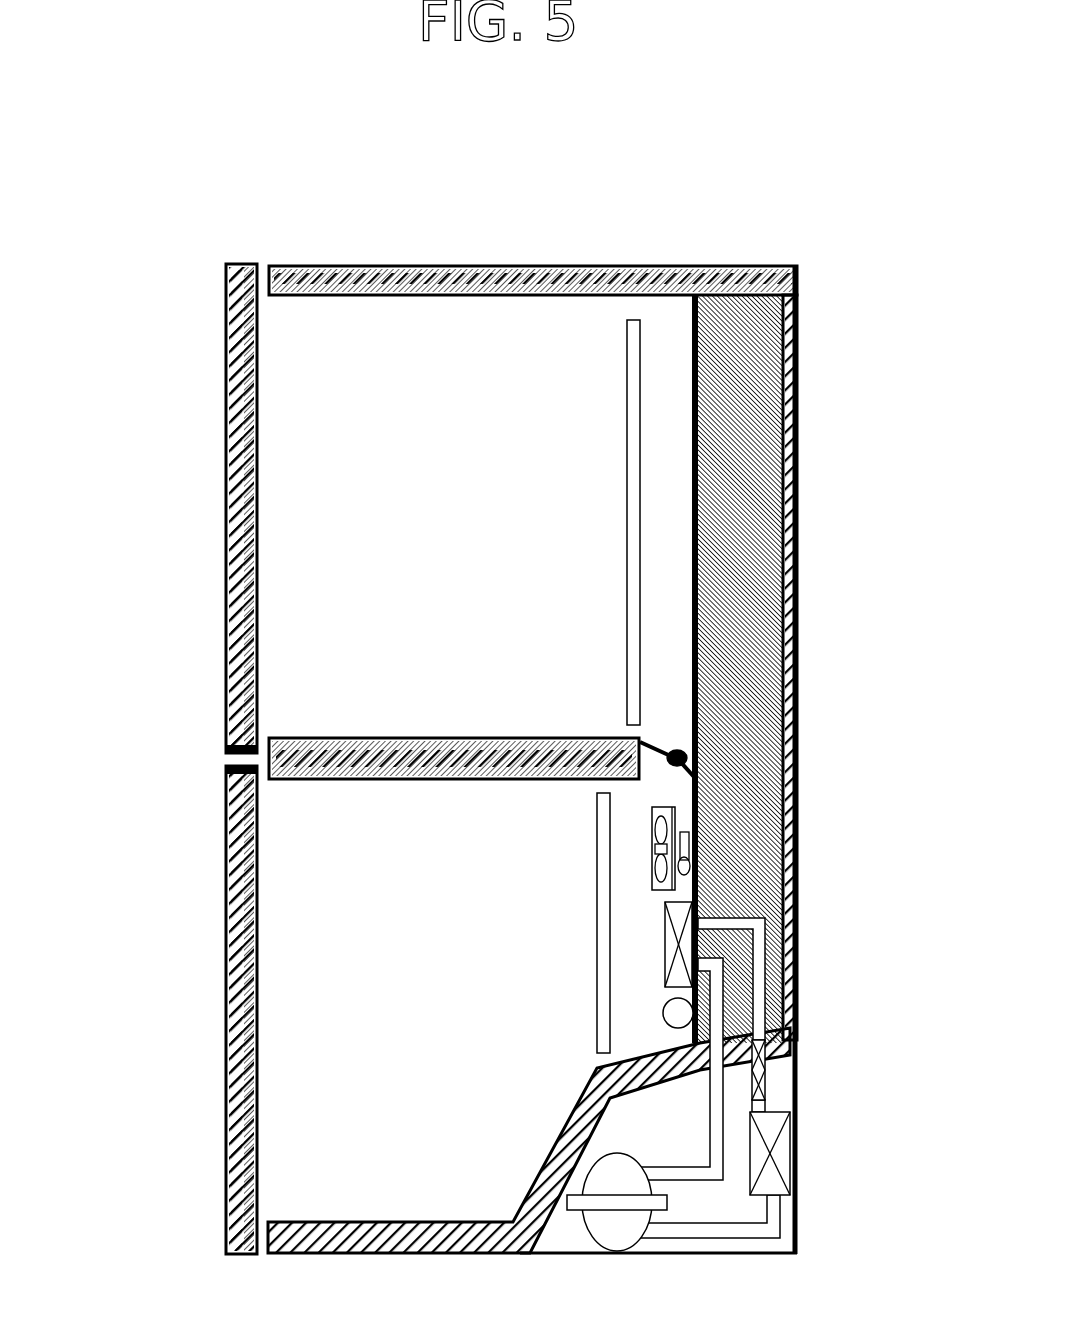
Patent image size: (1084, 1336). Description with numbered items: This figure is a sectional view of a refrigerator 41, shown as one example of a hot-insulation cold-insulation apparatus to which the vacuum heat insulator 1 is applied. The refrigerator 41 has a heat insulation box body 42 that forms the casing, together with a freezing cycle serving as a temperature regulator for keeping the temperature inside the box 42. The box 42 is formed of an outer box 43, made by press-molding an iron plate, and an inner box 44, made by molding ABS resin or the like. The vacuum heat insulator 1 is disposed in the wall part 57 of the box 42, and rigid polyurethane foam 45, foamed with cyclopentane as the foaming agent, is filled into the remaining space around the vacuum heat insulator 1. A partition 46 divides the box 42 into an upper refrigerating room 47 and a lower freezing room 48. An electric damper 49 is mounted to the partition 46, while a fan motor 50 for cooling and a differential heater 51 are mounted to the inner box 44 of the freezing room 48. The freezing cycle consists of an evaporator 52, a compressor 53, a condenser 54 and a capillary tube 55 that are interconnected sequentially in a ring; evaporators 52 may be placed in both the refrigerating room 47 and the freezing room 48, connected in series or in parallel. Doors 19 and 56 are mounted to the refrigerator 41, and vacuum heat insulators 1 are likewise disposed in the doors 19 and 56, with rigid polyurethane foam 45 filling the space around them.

The vacuum heat insulator 1 is at (800, 500).
The door 19 is at (215, 1016).
The refrigerator 41 is at (512, 253).
The heat insulation box body 42 is at (628, 265).
The outer box 43 is at (800, 417).
The inner box 44 is at (700, 360).
The rigid polyurethane foam 45 is at (740, 598).
The partition 46 is at (320, 779).
The refrigerating room 47 is at (340, 405).
The freezing room 48 is at (340, 1070).
The electric damper 49 is at (693, 743).
The fan motor 50 is at (658, 822).
The differential heater 51 is at (666, 1017).
The evaporator 52 is at (680, 917).
The compressor 53 is at (610, 1225).
The condenser 54 is at (767, 1125).
The capillary tube 55 is at (765, 1072).
The door 56 is at (215, 462).
The wall part 57 is at (762, 310).